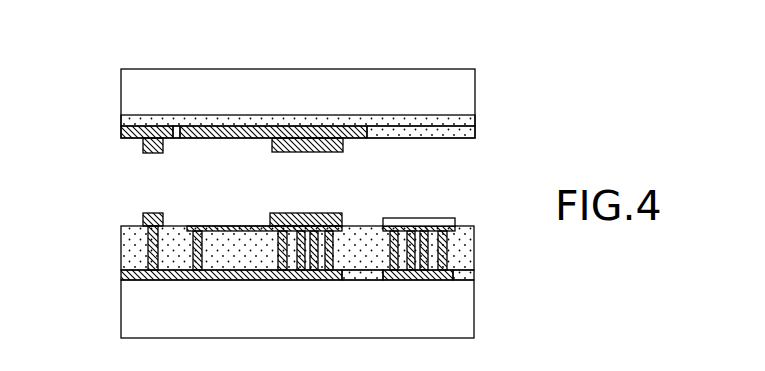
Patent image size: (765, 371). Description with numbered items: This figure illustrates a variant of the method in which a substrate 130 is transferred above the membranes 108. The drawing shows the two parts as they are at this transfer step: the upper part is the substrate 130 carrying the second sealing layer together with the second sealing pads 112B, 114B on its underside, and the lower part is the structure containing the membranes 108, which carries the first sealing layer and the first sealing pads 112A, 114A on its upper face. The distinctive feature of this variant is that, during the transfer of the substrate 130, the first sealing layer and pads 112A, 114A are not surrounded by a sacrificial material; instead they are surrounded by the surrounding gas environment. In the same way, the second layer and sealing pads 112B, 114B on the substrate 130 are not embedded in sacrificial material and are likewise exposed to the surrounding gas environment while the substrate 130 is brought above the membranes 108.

The substrate 130 is at (433, 80).
The second sealing pad 112B is at (306, 134).
The second sealing pad 114B is at (143, 148).
The membrane 108 is at (222, 231).
The first sealing pad 114A is at (143, 217).
The first sealing pad 112A is at (297, 213).